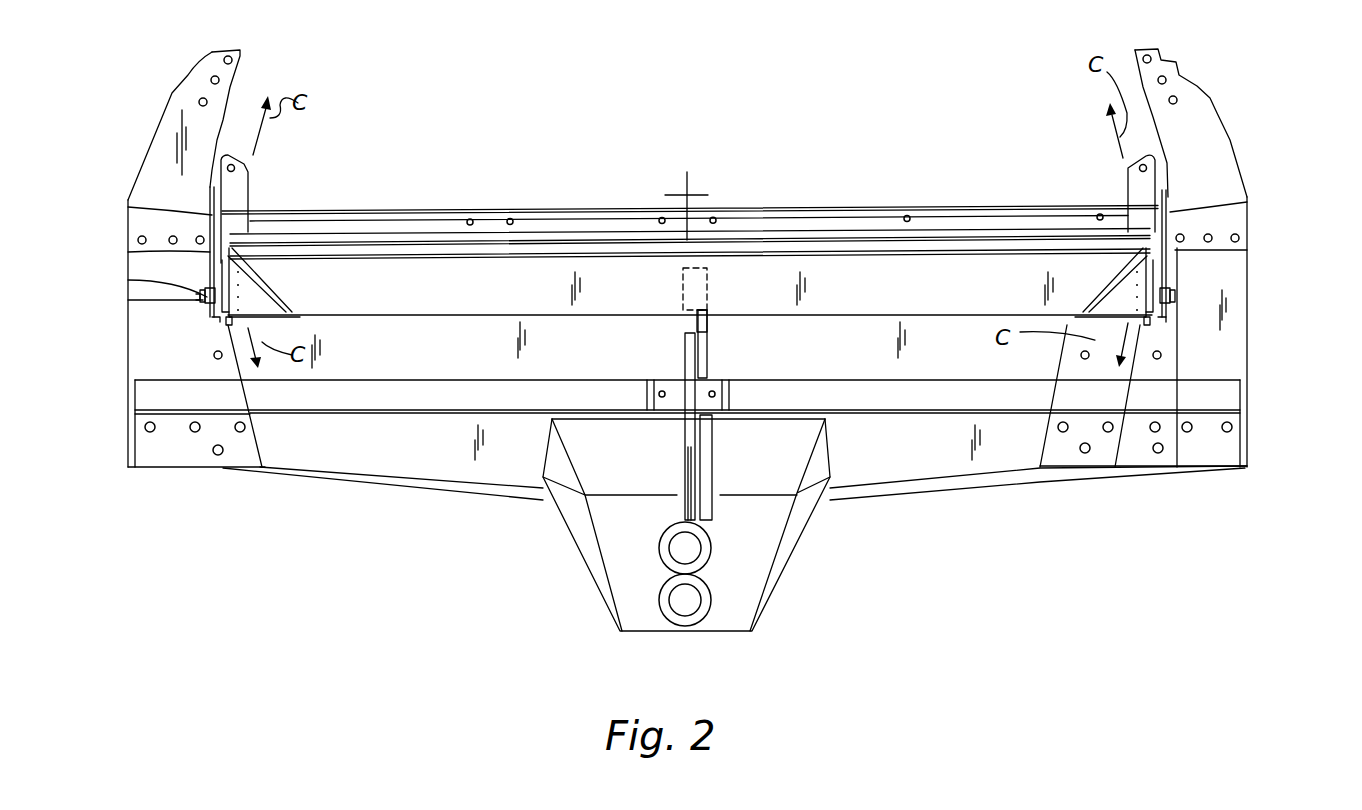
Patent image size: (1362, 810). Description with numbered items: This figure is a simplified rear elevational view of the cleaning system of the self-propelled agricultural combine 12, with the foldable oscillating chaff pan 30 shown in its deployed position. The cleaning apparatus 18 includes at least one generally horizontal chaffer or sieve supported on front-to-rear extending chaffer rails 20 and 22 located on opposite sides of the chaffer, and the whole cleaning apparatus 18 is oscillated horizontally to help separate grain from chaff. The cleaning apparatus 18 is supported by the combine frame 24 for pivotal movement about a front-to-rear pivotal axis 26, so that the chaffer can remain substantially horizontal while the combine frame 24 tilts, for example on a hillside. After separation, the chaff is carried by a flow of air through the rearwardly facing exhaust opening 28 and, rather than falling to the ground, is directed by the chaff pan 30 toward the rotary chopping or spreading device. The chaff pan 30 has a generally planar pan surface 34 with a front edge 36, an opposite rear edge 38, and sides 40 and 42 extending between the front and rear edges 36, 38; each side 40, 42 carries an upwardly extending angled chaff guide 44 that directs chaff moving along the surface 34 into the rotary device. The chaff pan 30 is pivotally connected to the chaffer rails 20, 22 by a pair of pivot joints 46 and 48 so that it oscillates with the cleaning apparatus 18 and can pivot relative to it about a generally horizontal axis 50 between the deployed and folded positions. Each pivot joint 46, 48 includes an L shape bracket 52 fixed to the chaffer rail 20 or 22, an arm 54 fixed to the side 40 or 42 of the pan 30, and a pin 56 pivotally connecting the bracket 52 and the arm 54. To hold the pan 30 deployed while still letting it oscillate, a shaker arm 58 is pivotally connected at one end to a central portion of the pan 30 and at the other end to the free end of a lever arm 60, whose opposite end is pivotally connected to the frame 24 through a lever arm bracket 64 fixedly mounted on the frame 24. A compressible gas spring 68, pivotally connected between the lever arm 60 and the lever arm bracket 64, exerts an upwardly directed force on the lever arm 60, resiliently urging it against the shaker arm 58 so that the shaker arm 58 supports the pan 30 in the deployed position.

The self-propelled agricultural combine 12 is at (1240, 535).
The cleaning apparatus 18 is at (776, 200).
The chaffer rail 20 is at (1128, 178).
The chaffer rail 22 is at (252, 176).
The combine frame 24 is at (1254, 472).
The pivotal axis 26 is at (692, 190).
The exhaust opening 28 is at (1140, 137).
The chaff pan 30 is at (403, 356).
The pan surface 34 is at (498, 282).
The front edge 36 is at (597, 262).
The rear edge 38 is at (585, 318).
The side 40 is at (1152, 320).
The side 42 is at (230, 322).
The angled chaff guide 44 is at (228, 250).
The pivot joint 46 is at (1170, 292).
The pivot joint 48 is at (210, 292).
The horizontal axis 50 is at (205, 300).
The L shape bracket 52 is at (210, 208).
The arm 54 is at (250, 292).
The pin 56 is at (203, 310).
The shaker arm 58 is at (705, 335).
The lever arm 60 is at (680, 347).
The lever arm bracket 64 is at (730, 402).
The gas spring 68 is at (715, 457).